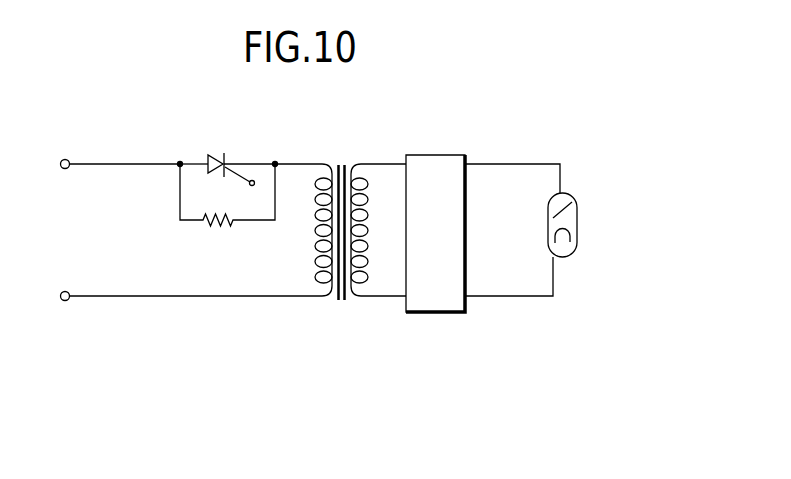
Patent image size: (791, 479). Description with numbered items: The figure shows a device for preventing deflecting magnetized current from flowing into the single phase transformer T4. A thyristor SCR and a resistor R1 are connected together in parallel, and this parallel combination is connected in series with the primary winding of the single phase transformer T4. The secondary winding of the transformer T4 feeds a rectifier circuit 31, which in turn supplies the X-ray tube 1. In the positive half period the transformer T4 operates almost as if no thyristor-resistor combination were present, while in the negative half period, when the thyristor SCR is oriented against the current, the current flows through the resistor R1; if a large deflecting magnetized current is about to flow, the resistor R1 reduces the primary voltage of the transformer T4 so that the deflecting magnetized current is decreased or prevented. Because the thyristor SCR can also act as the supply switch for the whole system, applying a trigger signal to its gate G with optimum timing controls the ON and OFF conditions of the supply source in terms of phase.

The X-ray tube 1 is at (577, 236).
The rectifier circuit 31 is at (438, 312).
The single phase transformer T4 is at (343, 303).
The thyristor SCR is at (227, 153).
The gate G is at (245, 188).
The resistor R1 is at (227, 209).